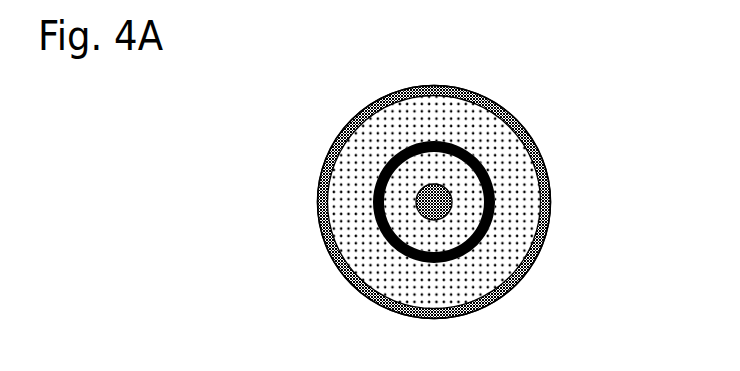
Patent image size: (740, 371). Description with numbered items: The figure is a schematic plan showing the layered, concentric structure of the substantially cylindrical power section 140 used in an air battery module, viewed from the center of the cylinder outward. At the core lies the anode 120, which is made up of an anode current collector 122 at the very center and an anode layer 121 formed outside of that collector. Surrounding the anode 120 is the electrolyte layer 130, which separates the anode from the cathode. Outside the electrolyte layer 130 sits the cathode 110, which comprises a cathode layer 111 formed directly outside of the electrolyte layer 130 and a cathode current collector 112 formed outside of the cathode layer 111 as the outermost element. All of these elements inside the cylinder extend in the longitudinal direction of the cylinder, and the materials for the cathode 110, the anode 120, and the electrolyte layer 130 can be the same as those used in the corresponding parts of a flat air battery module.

The power section 140 is at (448, 71).
The cathode 110 is at (501, 202).
The cathode layer 111 is at (527, 212).
The cathode current collector 112 is at (547, 182).
The anode 120 is at (503, 237).
The anode layer 121 is at (468, 244).
The anode current collector 122 is at (463, 227).
The electrolyte layer 130 is at (447, 211).